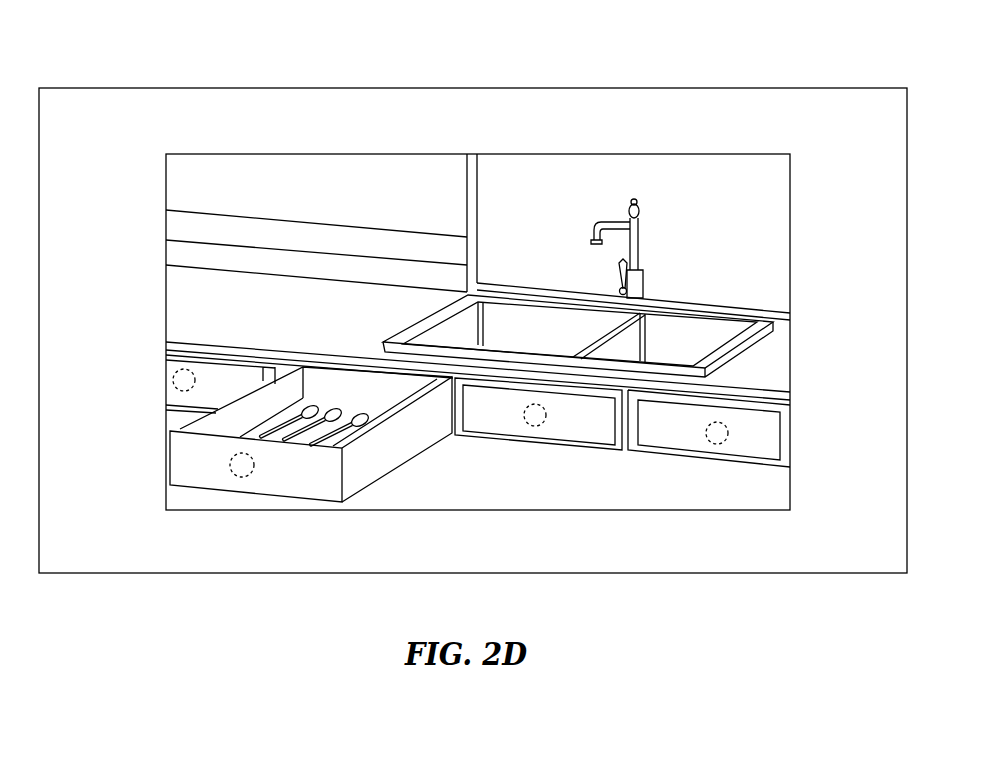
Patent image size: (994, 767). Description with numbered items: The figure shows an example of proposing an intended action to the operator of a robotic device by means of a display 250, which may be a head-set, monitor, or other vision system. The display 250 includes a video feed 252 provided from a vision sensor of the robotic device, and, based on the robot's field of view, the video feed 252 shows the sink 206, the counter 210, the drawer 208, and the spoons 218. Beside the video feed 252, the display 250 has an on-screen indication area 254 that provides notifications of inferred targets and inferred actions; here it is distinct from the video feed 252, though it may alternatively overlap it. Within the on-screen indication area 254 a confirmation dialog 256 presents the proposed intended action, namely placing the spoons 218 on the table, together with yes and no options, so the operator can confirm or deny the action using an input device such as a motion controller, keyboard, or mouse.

The display 250 is at (793, 87).
The video feed 252 is at (792, 212).
The on-screen indication area 254 is at (482, 129).
The confirmation dialog 256 is at (95, 225).
The counter 210 is at (233, 288).
The sink 206 is at (688, 318).
The drawer 208 is at (408, 452).
The spoons 218 is at (342, 413).